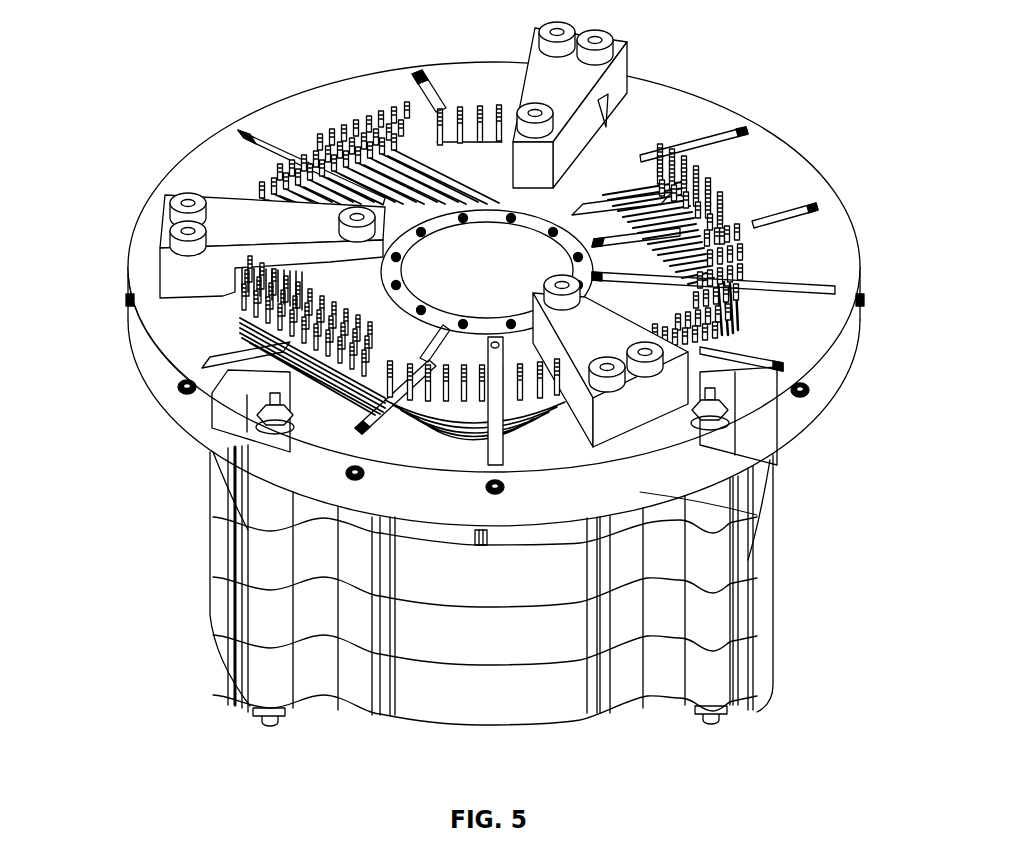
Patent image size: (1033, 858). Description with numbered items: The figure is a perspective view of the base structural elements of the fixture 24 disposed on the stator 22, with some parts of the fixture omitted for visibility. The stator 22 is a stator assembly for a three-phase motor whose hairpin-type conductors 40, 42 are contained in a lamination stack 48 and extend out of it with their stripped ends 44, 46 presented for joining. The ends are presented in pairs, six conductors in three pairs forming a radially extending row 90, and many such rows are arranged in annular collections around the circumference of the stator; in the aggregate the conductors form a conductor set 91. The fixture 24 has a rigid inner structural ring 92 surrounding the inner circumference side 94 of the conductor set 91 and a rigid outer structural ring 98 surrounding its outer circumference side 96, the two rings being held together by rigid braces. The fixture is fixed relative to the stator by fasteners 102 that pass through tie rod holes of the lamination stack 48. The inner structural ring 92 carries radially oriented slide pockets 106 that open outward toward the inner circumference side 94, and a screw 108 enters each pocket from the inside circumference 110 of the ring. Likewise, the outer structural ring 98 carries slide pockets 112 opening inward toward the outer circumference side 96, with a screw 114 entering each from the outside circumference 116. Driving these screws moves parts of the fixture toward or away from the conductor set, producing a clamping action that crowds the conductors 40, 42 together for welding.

The stator 22 is at (775, 497).
The fixture 24 is at (851, 232).
The conductor 40 is at (472, 418).
The conductor 42 is at (398, 350).
The end 44 is at (345, 300).
The end 46 is at (367, 383).
The lamination stack 48 is at (765, 560).
The row 90 is at (320, 393).
The conductor set 91 is at (740, 263).
The inner structural ring 92 is at (590, 202).
The inner circumference side 94 is at (623, 240).
The outer circumference side 96 is at (728, 192).
The outer structural ring 98 is at (824, 177).
The fasteners 102 is at (723, 412).
The slide pockets 106 is at (608, 210).
The screw 108 is at (458, 200).
The inside circumference 110 is at (513, 220).
The slide pockets 112 is at (772, 368).
The screw 114 is at (810, 392).
The outside circumference 116 is at (640, 492).